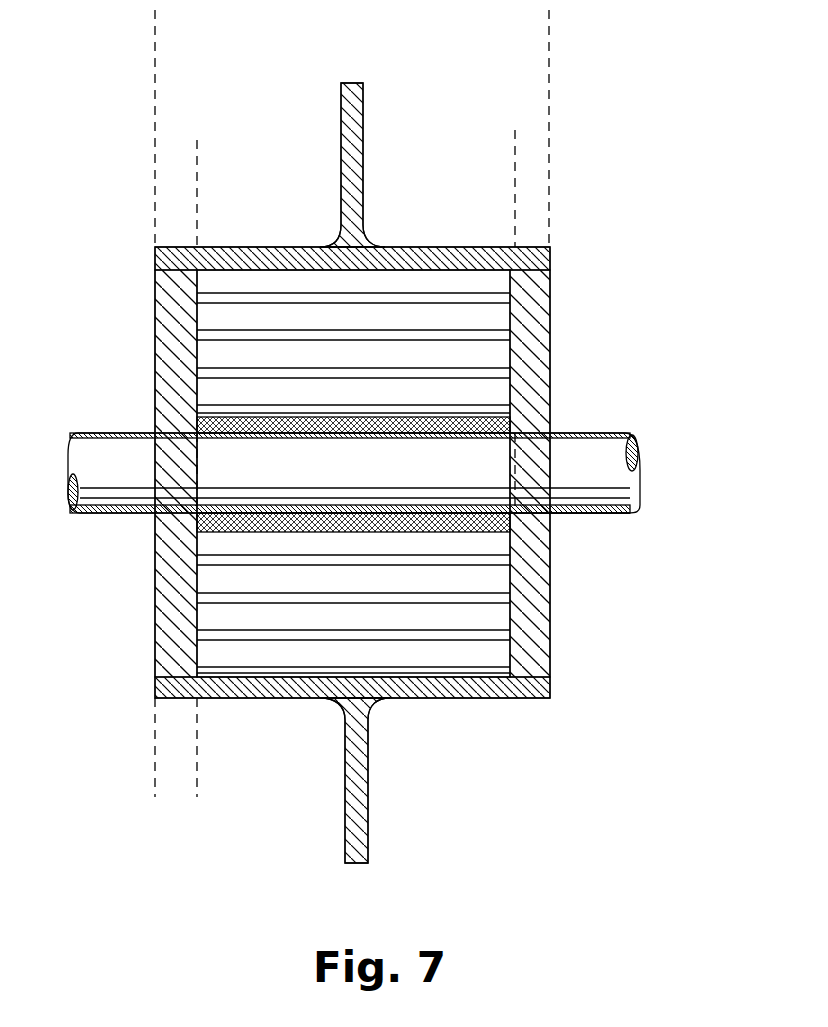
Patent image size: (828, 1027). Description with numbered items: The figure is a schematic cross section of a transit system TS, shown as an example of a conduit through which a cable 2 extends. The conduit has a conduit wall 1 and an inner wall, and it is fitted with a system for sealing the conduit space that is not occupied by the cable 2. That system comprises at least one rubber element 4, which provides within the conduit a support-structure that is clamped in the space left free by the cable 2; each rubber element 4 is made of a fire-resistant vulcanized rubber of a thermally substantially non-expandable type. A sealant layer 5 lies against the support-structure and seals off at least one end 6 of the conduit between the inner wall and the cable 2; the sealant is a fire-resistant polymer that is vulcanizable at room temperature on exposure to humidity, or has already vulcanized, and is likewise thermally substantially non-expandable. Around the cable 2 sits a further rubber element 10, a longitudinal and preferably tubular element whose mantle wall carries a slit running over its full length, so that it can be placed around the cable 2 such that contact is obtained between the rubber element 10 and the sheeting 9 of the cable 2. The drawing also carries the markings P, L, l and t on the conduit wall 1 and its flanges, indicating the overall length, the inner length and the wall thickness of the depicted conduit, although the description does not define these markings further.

The conduit wall 1 is at (223, 267).
The cable 2 is at (610, 457).
The rubber element 4 is at (390, 313).
The sealant layer 5 is at (178, 322).
The end of the conduit 6 is at (552, 677).
The sheeting of the cable 9 is at (590, 513).
The rubber element 10 is at (227, 530).
The flange P is at (341, 138).
The transit system TS is at (497, 205).
The length L is at (157, 49).
The length l is at (199, 163).
The wall thickness t is at (267, 772).